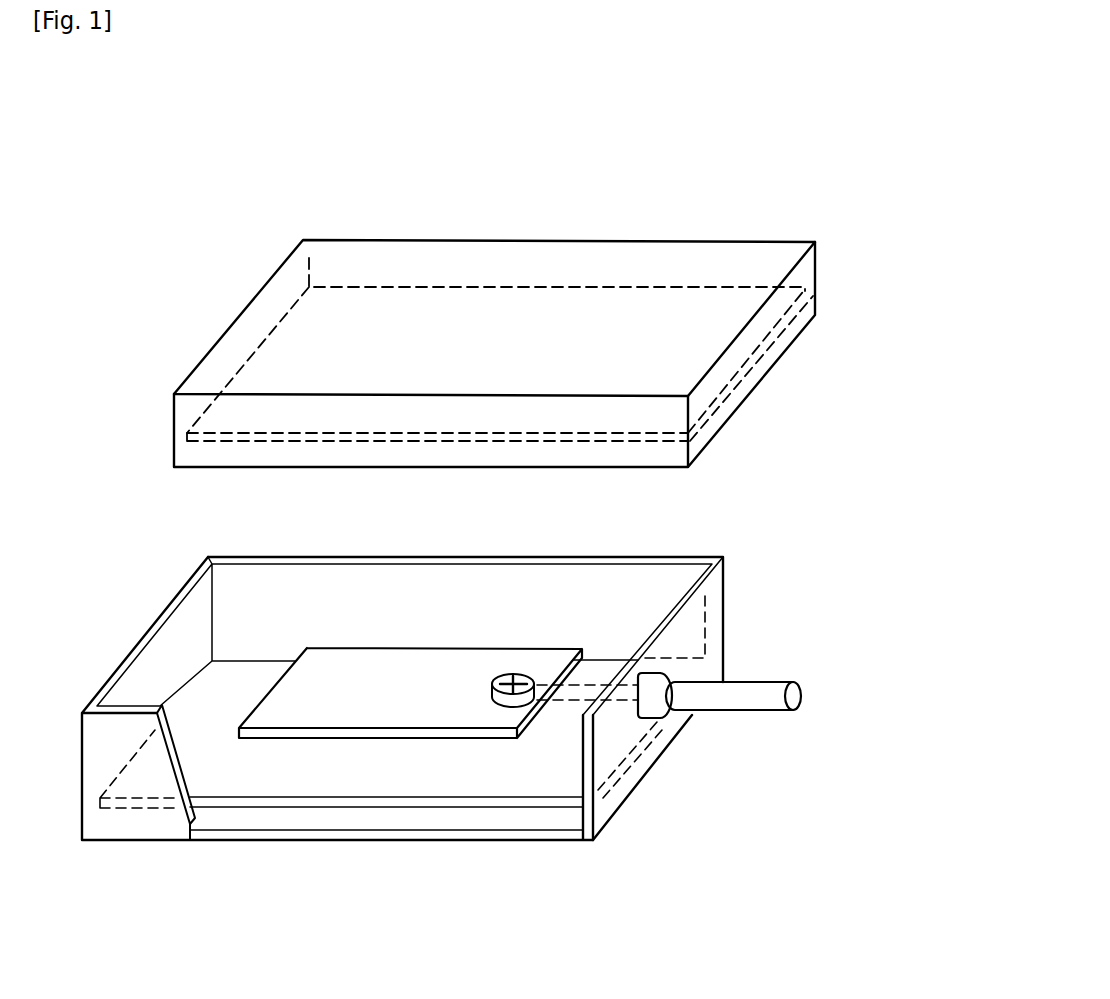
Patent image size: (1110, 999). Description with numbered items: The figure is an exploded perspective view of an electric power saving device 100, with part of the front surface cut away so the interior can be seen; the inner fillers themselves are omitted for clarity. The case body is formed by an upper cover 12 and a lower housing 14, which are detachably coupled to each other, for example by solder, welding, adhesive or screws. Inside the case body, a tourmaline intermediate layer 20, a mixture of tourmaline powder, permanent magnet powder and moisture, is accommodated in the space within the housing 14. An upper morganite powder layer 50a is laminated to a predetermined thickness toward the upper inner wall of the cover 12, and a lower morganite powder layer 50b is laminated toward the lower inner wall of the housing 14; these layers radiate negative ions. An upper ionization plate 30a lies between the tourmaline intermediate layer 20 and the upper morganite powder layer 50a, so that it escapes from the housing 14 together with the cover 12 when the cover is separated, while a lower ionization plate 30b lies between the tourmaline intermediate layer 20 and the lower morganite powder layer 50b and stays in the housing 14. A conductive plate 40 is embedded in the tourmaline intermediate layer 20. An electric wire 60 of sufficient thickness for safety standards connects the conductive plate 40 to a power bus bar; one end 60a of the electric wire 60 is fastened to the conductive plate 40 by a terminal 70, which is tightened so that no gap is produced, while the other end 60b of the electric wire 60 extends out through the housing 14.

The electric power saving device 100 is at (660, 141).
The upper cover 12 is at (808, 263).
The lower housing 14 is at (713, 600).
The tourmaline intermediate layer 20 is at (270, 600).
The upper ionization plate 30a is at (233, 437).
The lower ionization plate 30b is at (315, 802).
The conductive plate 40 is at (307, 703).
The upper morganite powder layer 50a is at (257, 410).
The lower morganite powder layer 50b is at (405, 817).
The electric wire 60 is at (699, 790).
The one end of the electric wire 60a is at (566, 697).
The other end of the electric wire 60b is at (765, 703).
The terminal 70 is at (510, 685).